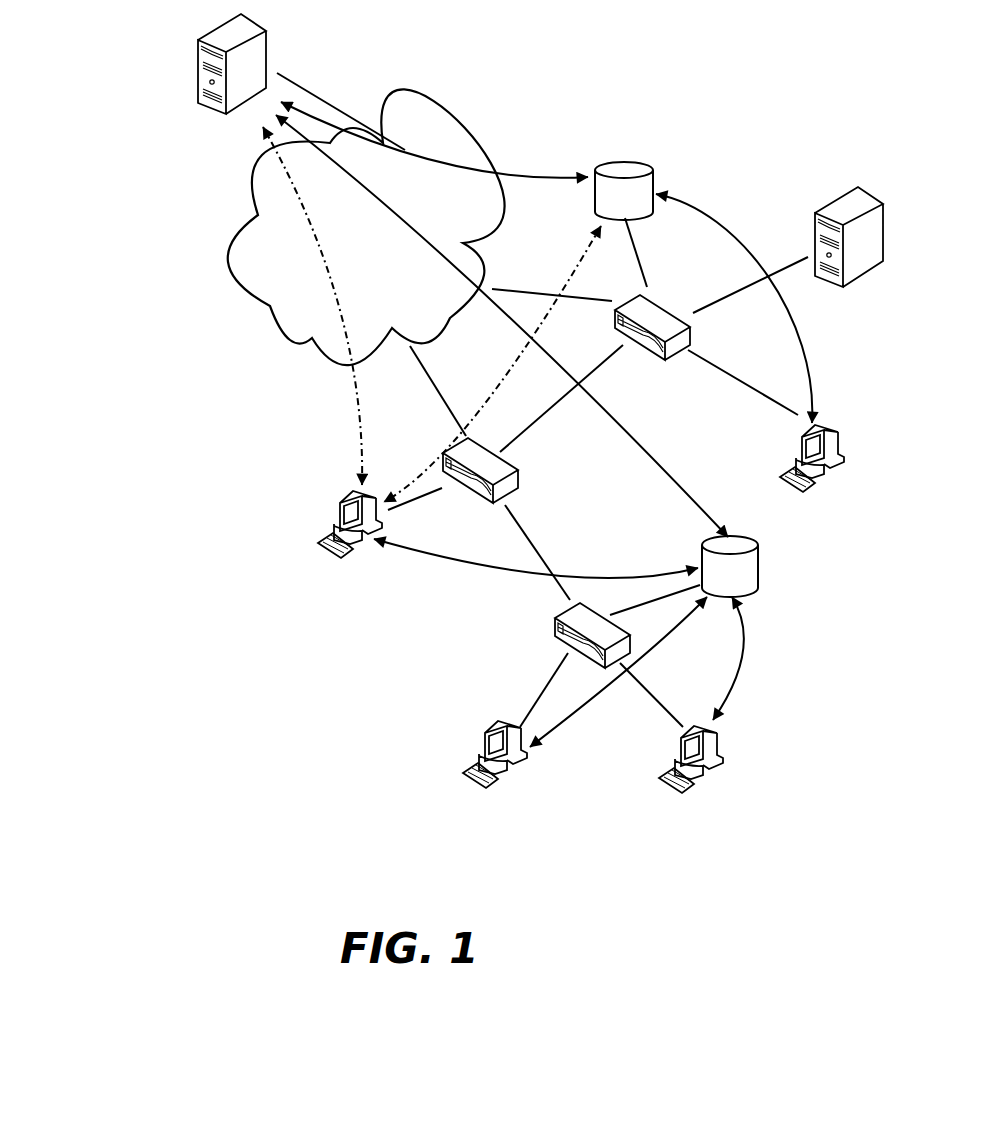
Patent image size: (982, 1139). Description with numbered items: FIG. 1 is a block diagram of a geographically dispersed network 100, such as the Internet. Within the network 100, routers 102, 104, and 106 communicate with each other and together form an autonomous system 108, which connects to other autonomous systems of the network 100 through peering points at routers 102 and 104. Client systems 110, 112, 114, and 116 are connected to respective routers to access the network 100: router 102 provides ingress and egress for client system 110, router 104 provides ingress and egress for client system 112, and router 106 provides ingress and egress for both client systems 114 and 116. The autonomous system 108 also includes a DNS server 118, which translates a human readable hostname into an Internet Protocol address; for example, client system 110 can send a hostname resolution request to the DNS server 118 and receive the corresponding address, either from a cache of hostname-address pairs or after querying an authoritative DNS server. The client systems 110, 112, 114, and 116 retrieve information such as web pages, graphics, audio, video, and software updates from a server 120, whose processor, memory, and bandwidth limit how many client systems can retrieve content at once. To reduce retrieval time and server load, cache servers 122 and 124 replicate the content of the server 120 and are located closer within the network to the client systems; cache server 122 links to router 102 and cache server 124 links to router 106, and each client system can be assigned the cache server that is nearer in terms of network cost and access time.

The network 100 is at (206, 279).
The router 102 is at (659, 306).
The router 104 is at (491, 503).
The router 106 is at (556, 626).
The autonomous system 108 is at (702, 128).
The client system 110 is at (803, 433).
The client system 112 is at (345, 502).
The client system 114 is at (488, 731).
The client system 116 is at (684, 736).
The DNS server 118 is at (832, 214).
The server 120 is at (217, 43).
The cache server 122 is at (596, 211).
The cache server 124 is at (760, 565).